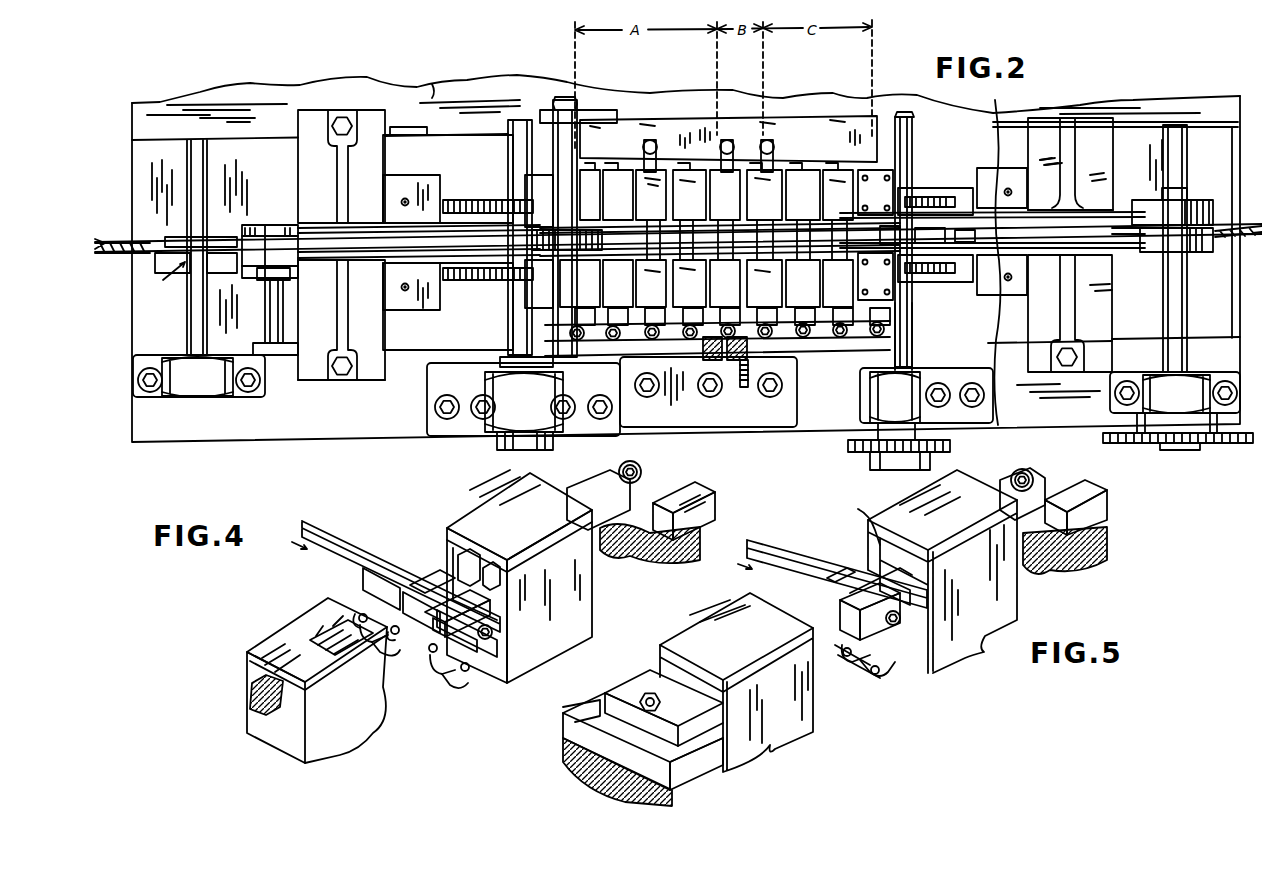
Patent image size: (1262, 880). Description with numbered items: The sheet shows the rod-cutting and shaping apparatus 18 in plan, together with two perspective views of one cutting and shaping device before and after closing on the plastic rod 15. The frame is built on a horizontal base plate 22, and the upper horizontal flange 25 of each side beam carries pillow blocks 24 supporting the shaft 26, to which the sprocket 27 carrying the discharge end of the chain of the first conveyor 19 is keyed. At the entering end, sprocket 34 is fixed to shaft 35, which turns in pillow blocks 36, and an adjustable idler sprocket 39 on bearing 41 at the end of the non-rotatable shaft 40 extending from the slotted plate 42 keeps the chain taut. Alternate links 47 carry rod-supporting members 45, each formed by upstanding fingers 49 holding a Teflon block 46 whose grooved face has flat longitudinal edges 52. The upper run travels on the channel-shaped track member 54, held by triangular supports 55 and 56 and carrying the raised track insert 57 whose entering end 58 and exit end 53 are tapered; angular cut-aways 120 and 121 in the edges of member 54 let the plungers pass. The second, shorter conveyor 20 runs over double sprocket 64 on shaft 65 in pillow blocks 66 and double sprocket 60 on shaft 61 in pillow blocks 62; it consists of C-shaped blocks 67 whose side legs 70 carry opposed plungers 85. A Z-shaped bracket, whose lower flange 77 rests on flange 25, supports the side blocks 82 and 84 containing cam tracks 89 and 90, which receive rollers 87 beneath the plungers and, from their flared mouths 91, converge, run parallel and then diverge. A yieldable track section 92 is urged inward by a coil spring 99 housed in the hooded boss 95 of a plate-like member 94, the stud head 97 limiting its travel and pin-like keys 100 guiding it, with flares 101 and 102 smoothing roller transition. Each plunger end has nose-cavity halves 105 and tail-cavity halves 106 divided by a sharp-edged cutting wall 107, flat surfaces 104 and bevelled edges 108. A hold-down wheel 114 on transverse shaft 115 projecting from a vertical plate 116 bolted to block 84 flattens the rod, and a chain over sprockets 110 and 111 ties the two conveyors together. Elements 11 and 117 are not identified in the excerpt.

In FIG. 2, the strip 11 is at (1230, 251).
In FIG. 2, the plastic rod 15 is at (232, 240).
In FIG. 4, the plastic rod 15 is at (354, 536).
In FIG. 5, the plastic rod 15 is at (802, 558).
In FIG. 2, the rod-cutting and shaping apparatus 18 is at (139, 96).
In FIG. 2, the first driven endless conveyor 19 is at (1152, 276).
In FIG. 2, the second driven endless conveyor 20 is at (876, 156).
In FIG. 2, the horizontal base plate 22 is at (430, 82).
In FIG. 2, the pillow blocks 24 is at (1170, 384).
In FIG. 2, the upper horizontal flange 25 is at (1145, 106).
In FIG. 2, the shaft 26 is at (1182, 313).
In FIG. 2, the sprocket 27 is at (1226, 226).
In FIG. 2, the sprocket 34 is at (168, 248).
In FIG. 2, the shaft 35 is at (208, 288).
In FIG. 2, the pillow blocks 36 is at (205, 397).
In FIG. 2, the adjustable idler sprocket 39 is at (300, 272).
In FIG. 2, the non-rotatable shaft 40 is at (264, 313).
In FIG. 2, the bearing 41 is at (286, 282).
In FIG. 2, the slotted plate 42 is at (275, 356).
In FIG. 2, the rod-supporting members 45 is at (695, 252).
In FIG. 4, the rod-supporting members 45 is at (420, 562).
In FIG. 5, the rod-supporting members 45 is at (828, 548).
In FIG. 2, the cradle-like block 46 is at (118, 258).
In FIG. 4, the cradle-like block 46 is at (358, 612).
In FIG. 5, the cradle-like block 46 is at (760, 591).
In FIG. 4, the links 47 is at (395, 652).
In FIG. 5, the links 47 is at (872, 676).
In FIG. 4, the upstanding fingers 49 is at (355, 622).
In FIG. 5, the upstanding fingers 49 is at (880, 651).
In FIG. 4, the flat longitudinal edges 52 is at (394, 562).
In FIG. 2, the tapered exit end 53 is at (1130, 252).
In FIG. 2, the track member 54 is at (372, 262).
In FIG. 2, the triangular support 55 is at (386, 370).
In FIG. 2, the triangular support 56 is at (1100, 166).
In FIG. 2, the raised inserted track member 57 is at (412, 234).
In FIG. 2, the tapered entering end 58 is at (316, 222).
In FIG. 2, the double sprocket 60 is at (922, 294).
In FIG. 2, the shaft 61 is at (905, 323).
In FIG. 2, the pillow blocks 62 is at (985, 424).
In FIG. 2, the double sprocket 64 is at (496, 290).
In FIG. 2, the shaft 65 is at (505, 151).
In FIG. 2, the pillow blocks 66 is at (488, 440).
In FIG. 2, the C-shaped blocks 67 is at (516, 321).
In FIG. 2, the side legs 70 is at (812, 162).
In FIG. 4, the side legs 70 is at (335, 732).
In FIG. 5, the side legs 70 is at (777, 748).
In FIG. 2, the horizontal lower flange 77 is at (716, 427).
In FIG. 2, the side block 82 is at (670, 358).
In FIG. 5, the side block 82 is at (575, 742).
In FIG. 2, the side block 84 is at (645, 127).
In FIG. 4, the side block 84 is at (700, 511).
In FIG. 5, the side block 84 is at (1110, 531).
In FIG. 2, the rod-cutting and shaping plungers 85 is at (640, 148).
In FIG. 4, the rod-cutting and shaping plungers 85 is at (355, 672).
In FIG. 5, the rod-cutting and shaping plungers 85 is at (830, 674).
In FIG. 4, the roller 87 is at (660, 491).
In FIG. 5, the roller 87 is at (602, 762).
In FIG. 2, the cam track 89 is at (603, 352).
In FIG. 5, the cam track 89 is at (712, 779).
In FIG. 2, the cam track 90 is at (595, 102).
In FIG. 4, the cam track 90 is at (690, 546).
In FIG. 5, the cam track 90 is at (1105, 561).
In FIG. 2, the flared entering end 91 is at (542, 125).
In FIG. 2, the yieldable track section 92 is at (780, 339).
In FIG. 2, the plate-like member 94 is at (710, 398).
In FIG. 2, the hooded hollow boss 95 is at (768, 393).
In FIG. 2, the head 97 is at (750, 388).
In FIG. 2, the coil compression spring 99 is at (740, 362).
In FIG. 2, the pin-like keys 100 is at (700, 339).
In FIG. 2, the flare 101 is at (726, 283).
In FIG. 2, the flare 102 is at (803, 284).
In FIG. 4, the upper and lower surfaces 104 is at (500, 627).
In FIG. 5, the upper and lower surfaces 104 is at (890, 591).
In FIG. 4, the nose shaping cavity halves 105 is at (468, 548).
In FIG. 4, the tail shaping cavity halves 106 is at (508, 592).
In FIG. 4, the sharp-edged wall 107 is at (492, 563).
In FIG. 2, the bevelled surfaces 108 is at (618, 224).
In FIG. 4, the bevelled surfaces 108 is at (443, 590).
In FIG. 5, the bevelled surfaces 108 is at (840, 570).
In FIG. 2, the sprocket 110 is at (1228, 445).
In FIG. 2, the sprocket 111 is at (850, 452).
In FIG. 2, the hold-down wheel 114 is at (537, 201).
In FIG. 2, the transverse shaft 115 is at (508, 170).
In FIG. 2, the vertical plate 116 is at (582, 112).
In FIG. 2, the block 117 is at (537, 284).
In FIG. 2, the cut-out sections 120 is at (447, 198).
In FIG. 2, the angular cut-away 121 is at (963, 196).